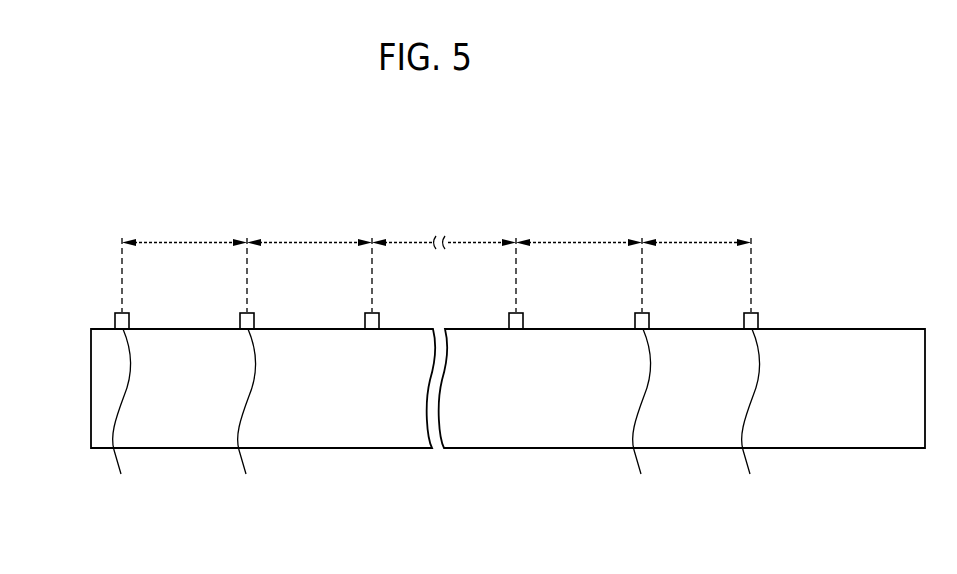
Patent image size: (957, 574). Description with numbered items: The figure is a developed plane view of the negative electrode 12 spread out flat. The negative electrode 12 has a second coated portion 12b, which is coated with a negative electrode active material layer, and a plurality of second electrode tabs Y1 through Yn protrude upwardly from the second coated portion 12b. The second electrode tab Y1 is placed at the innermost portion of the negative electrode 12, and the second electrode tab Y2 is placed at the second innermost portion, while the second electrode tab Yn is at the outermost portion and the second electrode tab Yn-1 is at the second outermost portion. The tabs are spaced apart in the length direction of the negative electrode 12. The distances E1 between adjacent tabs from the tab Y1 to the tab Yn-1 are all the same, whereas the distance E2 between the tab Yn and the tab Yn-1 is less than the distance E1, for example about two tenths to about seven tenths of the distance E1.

The negative electrode 12 is at (477, 385).
The second coated portion 12b is at (103, 388).
The second electrode tab Y1 is at (126, 409).
The second electrode tab Y2 is at (252, 409).
The second electrode tab Yn-1 is at (658, 409).
The second electrode tab Yn is at (756, 409).
The distance E1 is at (382, 232).
The distance E2 is at (696, 230).